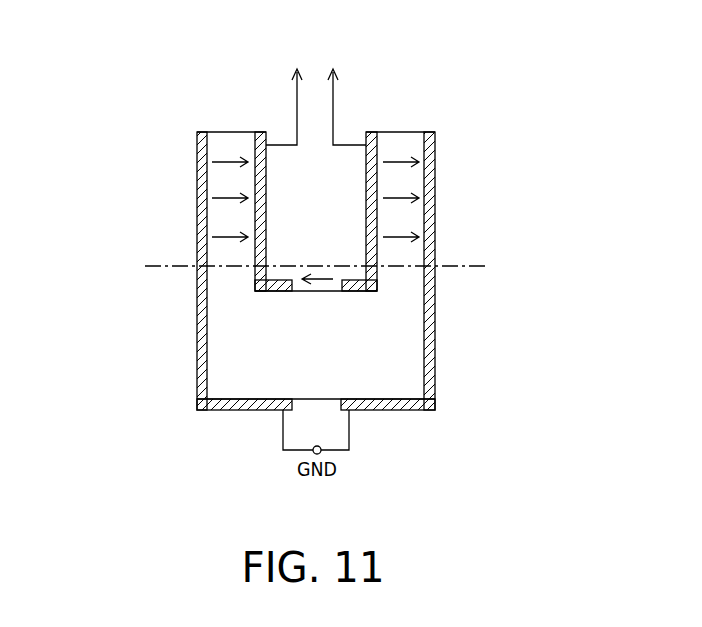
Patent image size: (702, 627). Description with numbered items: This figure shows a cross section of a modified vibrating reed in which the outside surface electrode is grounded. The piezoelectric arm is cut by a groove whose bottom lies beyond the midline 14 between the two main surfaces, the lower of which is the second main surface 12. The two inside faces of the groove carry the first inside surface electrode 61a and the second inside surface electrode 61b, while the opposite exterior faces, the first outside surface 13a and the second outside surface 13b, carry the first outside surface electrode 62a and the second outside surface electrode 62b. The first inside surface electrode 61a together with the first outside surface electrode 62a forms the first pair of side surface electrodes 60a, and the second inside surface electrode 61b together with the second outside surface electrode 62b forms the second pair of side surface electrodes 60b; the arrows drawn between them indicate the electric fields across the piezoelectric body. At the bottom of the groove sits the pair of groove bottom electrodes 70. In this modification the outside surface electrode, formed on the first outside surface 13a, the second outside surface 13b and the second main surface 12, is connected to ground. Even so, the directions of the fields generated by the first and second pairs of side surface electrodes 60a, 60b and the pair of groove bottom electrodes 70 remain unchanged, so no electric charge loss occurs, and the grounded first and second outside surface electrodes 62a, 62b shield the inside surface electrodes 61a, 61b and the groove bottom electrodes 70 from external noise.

The second main surface 12 is at (246, 403).
The first outside surface 13a is at (210, 352).
The second outside surface 13b is at (422, 352).
The midline 14 is at (473, 265).
The first pair of side surface electrodes 60a is at (183, 181).
The second pair of side surface electrodes 60b is at (447, 181).
The first inside surface electrode 61a is at (262, 222).
The second inside surface electrode 61b is at (366, 197).
The first outside surface electrode 62a is at (197, 307).
The second outside surface electrode 62b is at (436, 307).
The pair of groove bottom electrodes 70 is at (320, 302).